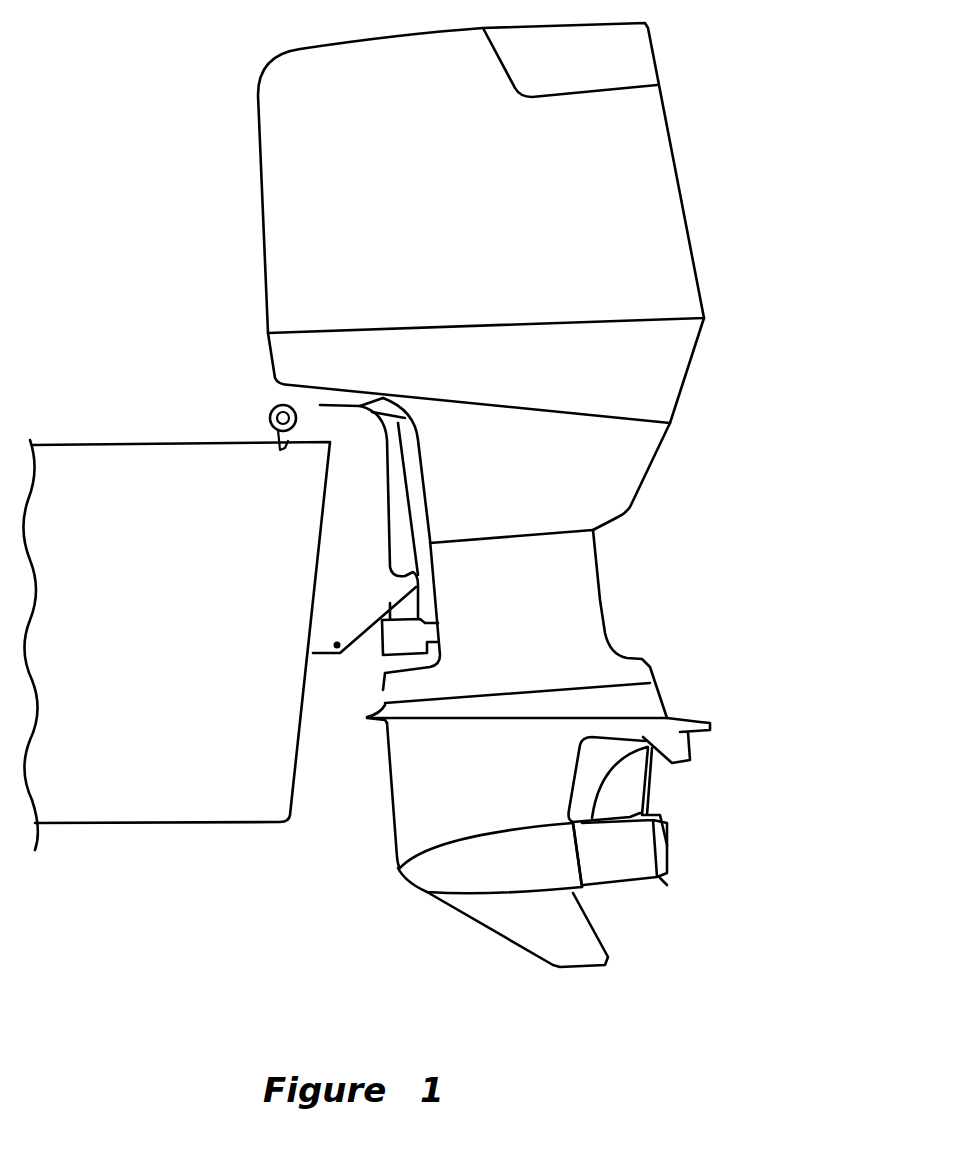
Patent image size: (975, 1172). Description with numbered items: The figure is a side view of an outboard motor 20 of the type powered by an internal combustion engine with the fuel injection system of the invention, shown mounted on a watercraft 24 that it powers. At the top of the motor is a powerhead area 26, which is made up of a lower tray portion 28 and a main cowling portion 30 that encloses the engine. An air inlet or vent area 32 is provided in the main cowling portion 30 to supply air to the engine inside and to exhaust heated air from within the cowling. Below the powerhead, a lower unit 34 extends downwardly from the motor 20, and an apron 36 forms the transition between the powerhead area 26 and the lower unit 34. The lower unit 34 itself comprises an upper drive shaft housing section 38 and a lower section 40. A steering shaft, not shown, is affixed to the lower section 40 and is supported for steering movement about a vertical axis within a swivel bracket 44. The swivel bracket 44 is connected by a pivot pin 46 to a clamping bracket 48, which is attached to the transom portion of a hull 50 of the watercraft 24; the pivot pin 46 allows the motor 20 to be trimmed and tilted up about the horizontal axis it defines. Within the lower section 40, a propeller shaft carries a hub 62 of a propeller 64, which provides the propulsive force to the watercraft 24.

The outboard motor 20 is at (232, 70).
The watercraft 24 is at (157, 368).
The powerhead area 26 is at (790, 95).
The lower tray portion 28 is at (675, 345).
The main cowling portion 30 is at (660, 163).
The air inlet or vent area 32 is at (643, 59).
The lower unit 34 is at (735, 590).
The apron 36 is at (637, 463).
The drive shaft housing section 38 is at (590, 607).
The lower section 40 is at (633, 705).
The swivel bracket 44 is at (392, 481).
The pivot pin 46 is at (270, 417).
The clamping bracket 48 is at (340, 538).
The hull 50 is at (105, 442).
The hub 62 is at (520, 853).
The propeller 64 is at (623, 785).